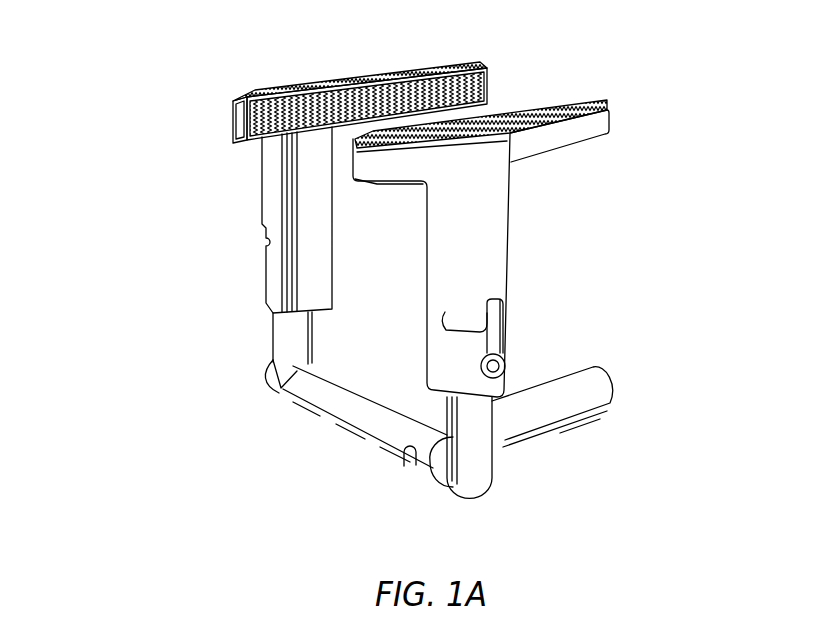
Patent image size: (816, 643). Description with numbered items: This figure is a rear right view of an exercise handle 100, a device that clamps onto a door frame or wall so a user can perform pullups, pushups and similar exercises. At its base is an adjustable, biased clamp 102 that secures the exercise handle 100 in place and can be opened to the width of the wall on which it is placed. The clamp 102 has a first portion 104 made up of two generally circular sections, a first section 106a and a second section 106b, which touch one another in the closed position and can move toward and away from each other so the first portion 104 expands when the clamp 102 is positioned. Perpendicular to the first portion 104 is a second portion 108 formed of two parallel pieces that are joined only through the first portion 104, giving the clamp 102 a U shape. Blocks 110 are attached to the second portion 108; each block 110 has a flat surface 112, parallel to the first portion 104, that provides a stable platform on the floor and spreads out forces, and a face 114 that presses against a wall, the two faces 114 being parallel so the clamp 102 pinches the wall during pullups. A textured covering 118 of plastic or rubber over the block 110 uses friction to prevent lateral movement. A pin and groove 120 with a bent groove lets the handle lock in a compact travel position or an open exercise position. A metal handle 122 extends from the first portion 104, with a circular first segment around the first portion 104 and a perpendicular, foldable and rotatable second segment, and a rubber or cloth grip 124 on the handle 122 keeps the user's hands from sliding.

The exercise handle 100 is at (120, 96).
The clamp 102 is at (421, 395).
The first portion 104 is at (265, 380).
The first section 106a is at (280, 388).
The second section 106b is at (440, 477).
The second portion 108 is at (283, 323).
The block 110 is at (402, 262).
The flat surface 112 is at (454, 88).
The face 114 is at (481, 92).
The textured covering 118 is at (486, 69).
The pin and groove 120 is at (487, 340).
The handle 122 is at (592, 388).
The grip 124 is at (567, 405).